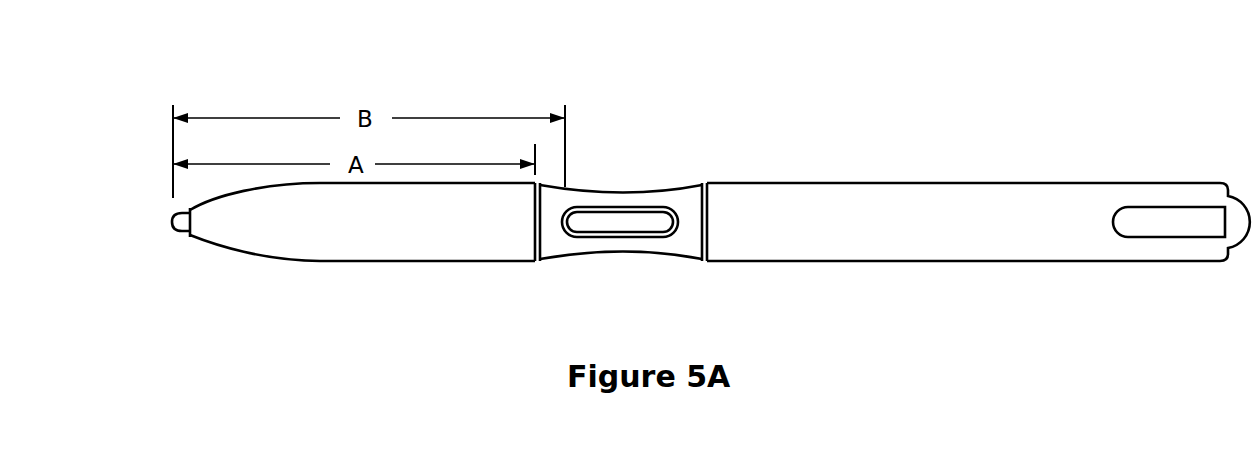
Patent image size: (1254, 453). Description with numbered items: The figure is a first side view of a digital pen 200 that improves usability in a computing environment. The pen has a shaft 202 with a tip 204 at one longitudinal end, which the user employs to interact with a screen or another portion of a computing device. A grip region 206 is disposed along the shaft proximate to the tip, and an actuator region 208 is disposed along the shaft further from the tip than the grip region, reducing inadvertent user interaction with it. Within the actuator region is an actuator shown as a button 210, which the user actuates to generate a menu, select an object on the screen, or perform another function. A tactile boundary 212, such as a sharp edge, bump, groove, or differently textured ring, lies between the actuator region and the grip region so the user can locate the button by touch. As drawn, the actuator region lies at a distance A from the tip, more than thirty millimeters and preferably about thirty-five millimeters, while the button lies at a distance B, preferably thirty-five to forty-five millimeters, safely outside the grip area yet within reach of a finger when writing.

The digital pen 200 is at (965, 145).
The shaft 202 is at (792, 222).
The tip 204 is at (178, 229).
The grip region 206 is at (342, 246).
The actuator region 208 is at (632, 185).
The button 210 is at (632, 220).
The tactile boundary 212 is at (707, 184).